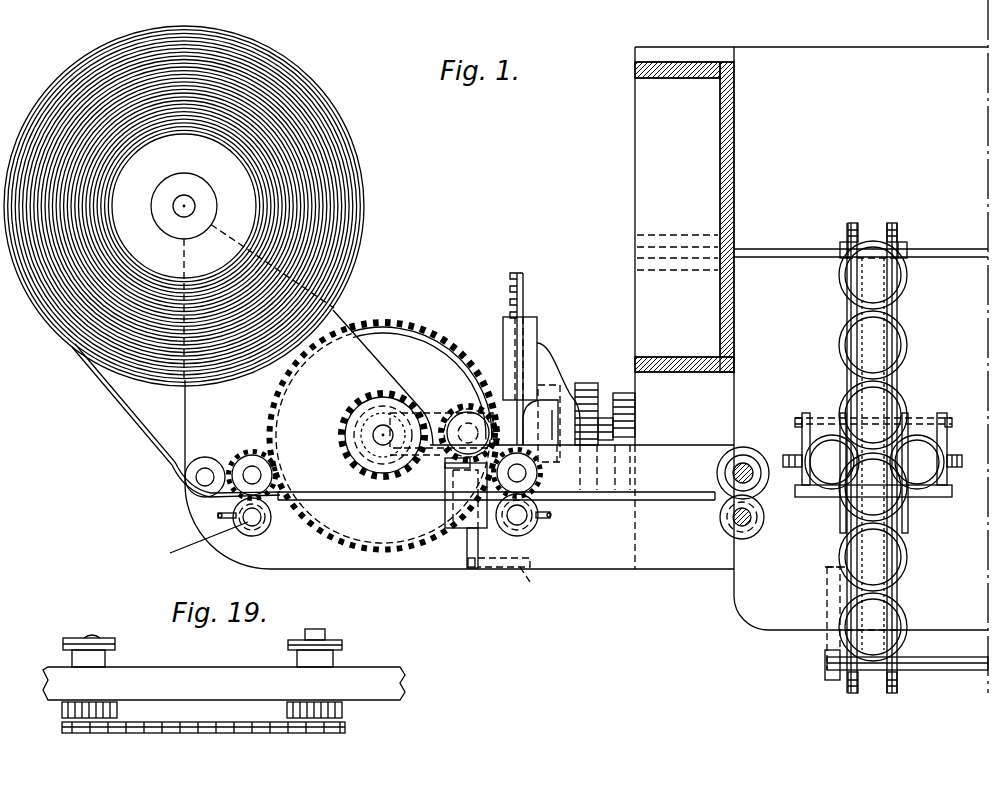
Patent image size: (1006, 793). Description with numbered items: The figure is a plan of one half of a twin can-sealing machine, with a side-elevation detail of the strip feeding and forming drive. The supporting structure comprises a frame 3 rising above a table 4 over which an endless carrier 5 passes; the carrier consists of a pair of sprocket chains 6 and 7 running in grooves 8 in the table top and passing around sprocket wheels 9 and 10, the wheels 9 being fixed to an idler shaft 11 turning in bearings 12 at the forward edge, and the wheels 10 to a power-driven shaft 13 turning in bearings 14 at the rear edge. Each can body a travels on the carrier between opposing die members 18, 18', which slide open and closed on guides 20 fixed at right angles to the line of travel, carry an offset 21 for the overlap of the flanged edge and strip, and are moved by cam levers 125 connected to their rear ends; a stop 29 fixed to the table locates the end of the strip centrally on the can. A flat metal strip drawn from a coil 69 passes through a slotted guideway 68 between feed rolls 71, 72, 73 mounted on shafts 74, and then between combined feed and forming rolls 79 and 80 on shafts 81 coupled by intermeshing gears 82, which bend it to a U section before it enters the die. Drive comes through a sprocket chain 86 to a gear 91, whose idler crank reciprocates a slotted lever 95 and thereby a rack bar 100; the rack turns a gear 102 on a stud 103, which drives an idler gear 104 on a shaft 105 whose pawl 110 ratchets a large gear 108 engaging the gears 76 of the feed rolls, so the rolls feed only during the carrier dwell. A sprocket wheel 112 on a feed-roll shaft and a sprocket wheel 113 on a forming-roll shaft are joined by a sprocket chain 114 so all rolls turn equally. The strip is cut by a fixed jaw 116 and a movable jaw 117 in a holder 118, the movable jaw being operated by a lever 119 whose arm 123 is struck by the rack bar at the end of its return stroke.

In FIG. 1, the frame 3 is at (653, 138).
In FIG. 1, the table 4 is at (757, 603).
In FIG. 19, the table 4 is at (405, 683).
In FIG. 1, the endless carriers 5 is at (902, 458).
In FIG. 1, the sprocket chain 6 is at (898, 593).
In FIG. 1, the sprocket chain 7 is at (855, 590).
In FIG. 1, the grooves 8 is at (848, 312).
In FIG. 1, the sprocket wheels 9 is at (850, 692).
In FIG. 1, the sprocket wheels 10 is at (854, 223).
In FIG. 1, the idler shaft 11 is at (947, 670).
In FIG. 1, the bearings 12 is at (838, 652).
In FIG. 1, the shaft 13 is at (935, 249).
In FIG. 1, the bearings 14 is at (677, 242).
In FIG. 1, the die member 18 is at (955, 435).
In FIG. 1, the die member 18' is at (814, 435).
In FIG. 1, the guides 20 is at (932, 416).
In FIG. 1, the offset 21 is at (874, 462).
In FIG. 1, the stop 29 is at (983, 497).
In FIG. 1, the guideways 68 is at (345, 498).
In FIG. 1, the coil 69 is at (342, 172).
In FIG. 1, the feed roll 71 is at (523, 442).
In FIG. 19, the feed roll 71 is at (103, 658).
In FIG. 1, the feed roll 72 is at (258, 527).
In FIG. 1, the feed roll 73 is at (248, 450).
In FIG. 1, the shafts 74 is at (256, 474).
In FIG. 19, the shafts 74 is at (90, 635).
In FIG. 1, the gear 76 is at (228, 453).
In FIG. 19, the gear 76 is at (113, 702).
In FIG. 1, the combined feed and forming roll 79 is at (745, 525).
In FIG. 1, the combined feed and forming roll 80 is at (744, 450).
In FIG. 19, the combined feed and forming roll 80 is at (333, 642).
In FIG. 1, the shaft 81 is at (748, 480).
In FIG. 19, the shaft 81 is at (320, 633).
In FIG. 19, the intermeshing gears 82 is at (343, 710).
In FIG. 1, the sprocket chain 86 is at (627, 405).
In FIG. 1, the gear 91 is at (589, 383).
In FIG. 1, the slotted lever 95 is at (543, 427).
In FIG. 1, the rack bar 100 is at (522, 290).
In FIG. 1, the gear 102 is at (445, 403).
In FIG. 1, the stud 103 is at (473, 360).
In FIG. 1, the idler gear 104 is at (352, 405).
In FIG. 1, the shaft 105 is at (383, 428).
In FIG. 1, the gear 108 is at (378, 320).
In FIG. 1, the pawl 110 is at (352, 445).
In FIG. 19, the sprocket wheel 112 is at (90, 728).
In FIG. 19, the sprocket wheel 113 is at (320, 727).
In FIG. 19, the sprocket chain 114 is at (210, 727).
In FIG. 1, the fixed jaw 116 is at (445, 471).
In FIG. 1, the movable jaw 117 is at (478, 547).
In FIG. 1, the holder 118 is at (458, 528).
In FIG. 1, the lever 119 is at (470, 568).
In FIG. 1, the arm 123 is at (530, 582).
In FIG. 1, the cam levers 125 is at (790, 455).
In FIG. 1, the body of the can a is at (880, 345).